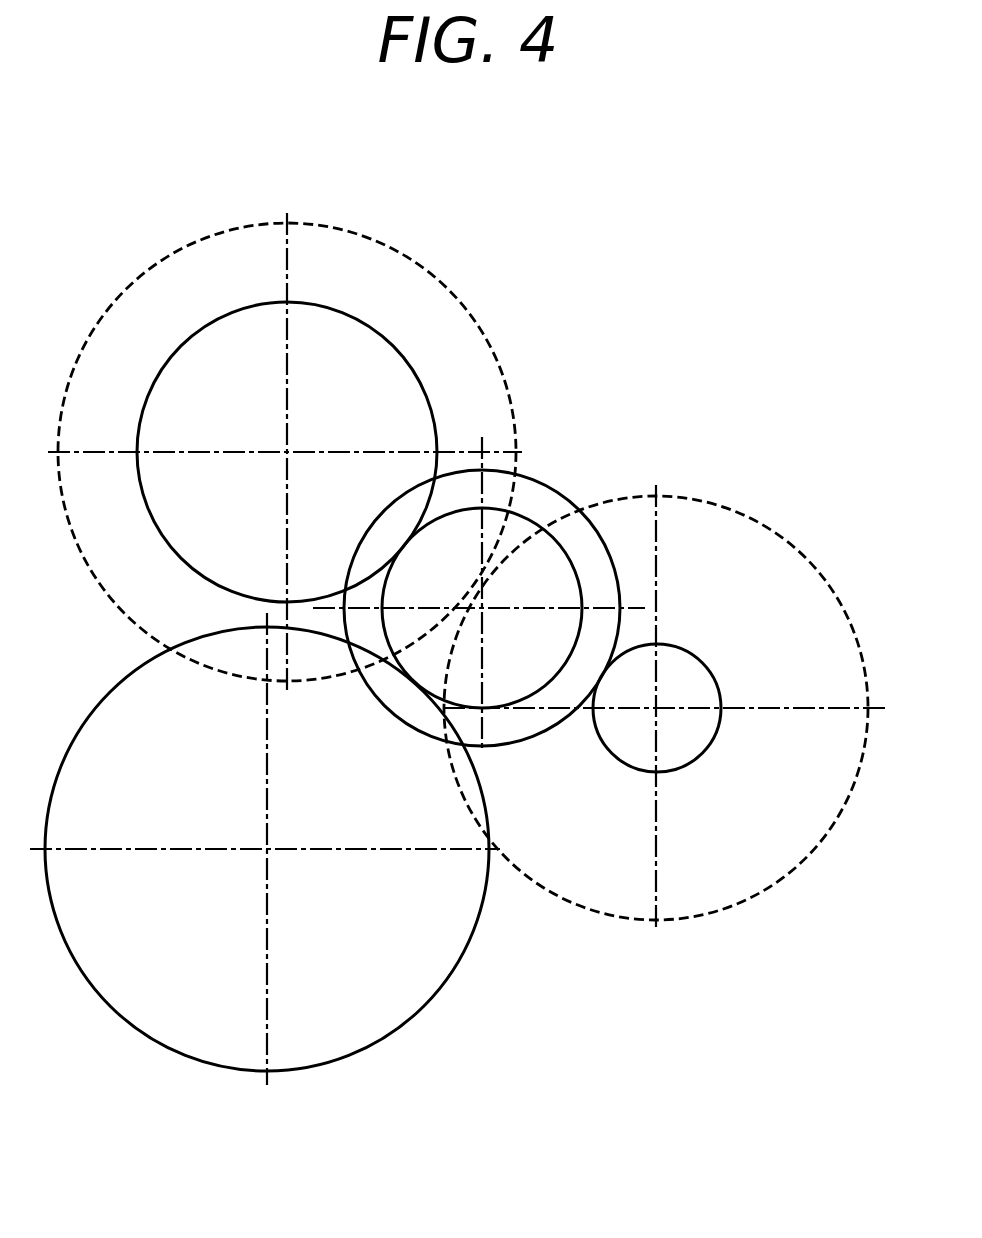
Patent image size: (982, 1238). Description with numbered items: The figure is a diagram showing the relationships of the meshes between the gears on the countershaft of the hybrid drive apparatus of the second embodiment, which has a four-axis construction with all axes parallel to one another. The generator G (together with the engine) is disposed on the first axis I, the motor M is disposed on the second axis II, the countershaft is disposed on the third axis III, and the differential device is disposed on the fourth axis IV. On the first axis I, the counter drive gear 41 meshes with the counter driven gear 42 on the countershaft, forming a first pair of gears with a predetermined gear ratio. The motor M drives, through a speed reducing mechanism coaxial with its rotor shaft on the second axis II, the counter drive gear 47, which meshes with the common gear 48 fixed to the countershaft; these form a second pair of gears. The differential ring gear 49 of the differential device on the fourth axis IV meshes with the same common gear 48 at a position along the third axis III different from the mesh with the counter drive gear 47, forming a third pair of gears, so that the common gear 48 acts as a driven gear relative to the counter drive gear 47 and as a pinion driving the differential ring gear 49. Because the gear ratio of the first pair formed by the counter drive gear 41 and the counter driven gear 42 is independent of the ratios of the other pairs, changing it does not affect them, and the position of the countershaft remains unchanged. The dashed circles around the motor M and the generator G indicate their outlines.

The motor M is at (472, 318).
The generator G is at (712, 502).
The first axis I is at (657, 708).
The second axis II is at (287, 452).
The third axis III is at (482, 610).
The fourth axis IV is at (267, 849).
The counter drive gear 41 is at (715, 675).
The counter driven gear 42 is at (543, 737).
The counter drive gear 47 is at (432, 428).
The common gear 48 is at (532, 517).
The differential ring gear 49 is at (472, 937).